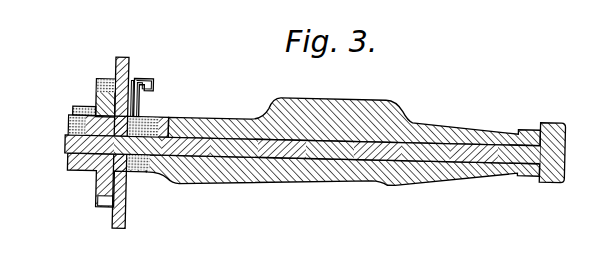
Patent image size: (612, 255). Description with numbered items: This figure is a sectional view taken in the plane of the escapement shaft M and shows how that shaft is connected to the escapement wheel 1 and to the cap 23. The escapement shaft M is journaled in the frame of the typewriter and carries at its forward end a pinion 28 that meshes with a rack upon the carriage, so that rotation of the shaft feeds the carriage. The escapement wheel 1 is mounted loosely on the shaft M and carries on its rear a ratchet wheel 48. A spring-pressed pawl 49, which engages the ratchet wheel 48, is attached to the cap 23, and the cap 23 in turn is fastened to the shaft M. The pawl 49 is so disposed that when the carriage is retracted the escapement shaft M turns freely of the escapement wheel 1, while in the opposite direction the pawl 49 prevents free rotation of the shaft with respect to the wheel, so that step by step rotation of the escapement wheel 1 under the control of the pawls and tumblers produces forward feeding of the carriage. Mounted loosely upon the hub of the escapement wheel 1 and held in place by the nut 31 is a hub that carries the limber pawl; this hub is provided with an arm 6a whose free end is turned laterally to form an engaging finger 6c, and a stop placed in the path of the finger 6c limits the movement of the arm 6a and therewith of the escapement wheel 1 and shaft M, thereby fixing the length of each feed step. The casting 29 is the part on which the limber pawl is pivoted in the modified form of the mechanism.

The escapement wheel 1 is at (127, 56).
The arm 6a is at (138, 105).
The engaging finger 6c is at (147, 78).
The cap 23 is at (95, 95).
The pinion 28 is at (556, 126).
The casting 29 is at (209, 118).
The nut 31 is at (143, 118).
The ratchet wheel 48 is at (90, 110).
The spring-pressed pawl 49 is at (108, 77).
The escapement shaft M is at (65, 143).